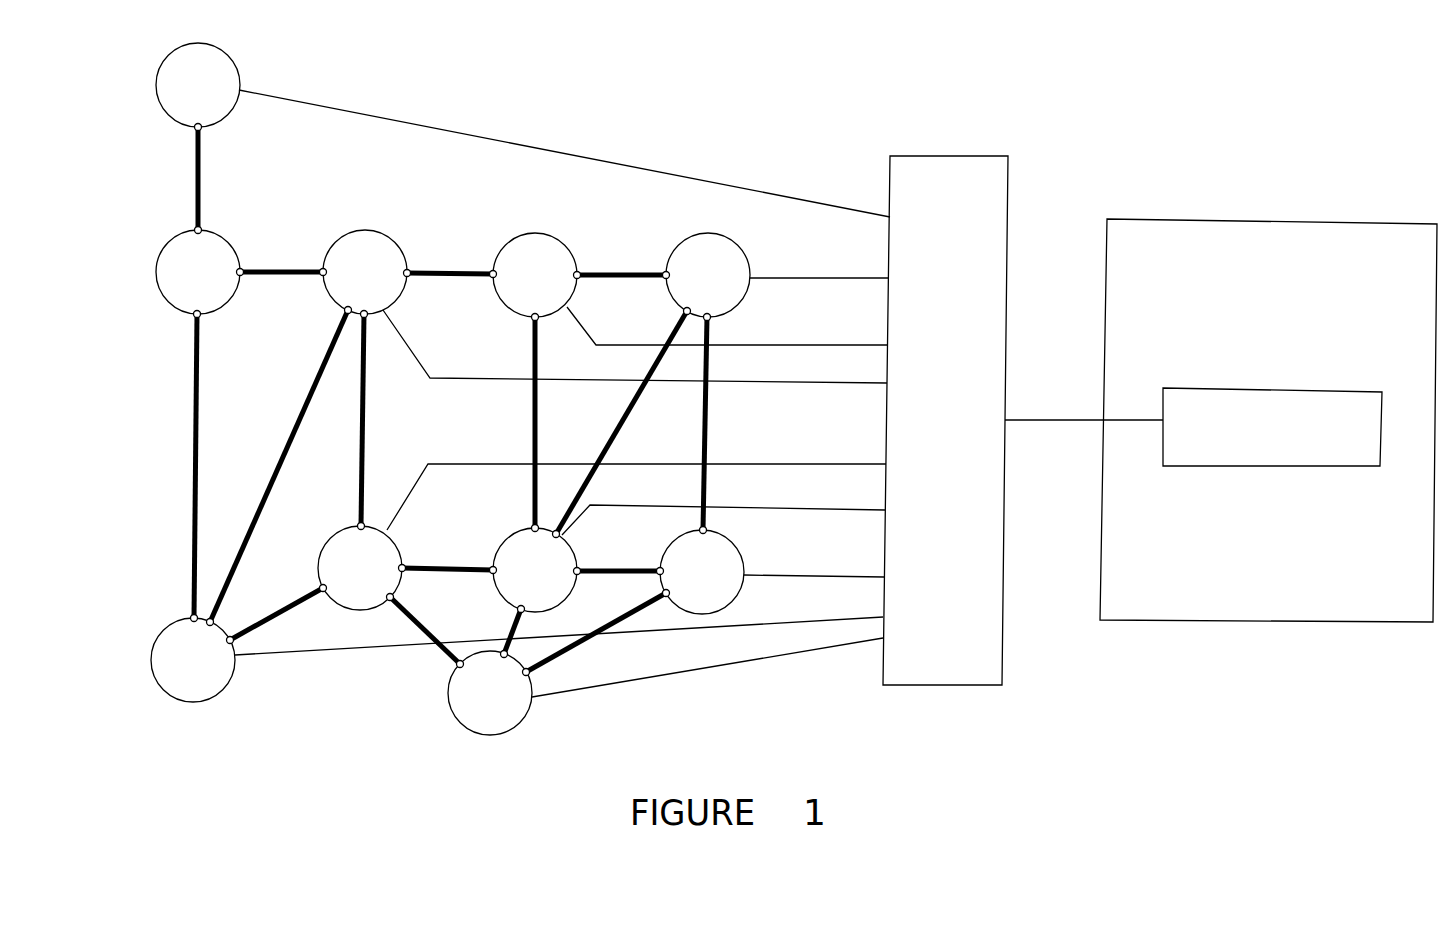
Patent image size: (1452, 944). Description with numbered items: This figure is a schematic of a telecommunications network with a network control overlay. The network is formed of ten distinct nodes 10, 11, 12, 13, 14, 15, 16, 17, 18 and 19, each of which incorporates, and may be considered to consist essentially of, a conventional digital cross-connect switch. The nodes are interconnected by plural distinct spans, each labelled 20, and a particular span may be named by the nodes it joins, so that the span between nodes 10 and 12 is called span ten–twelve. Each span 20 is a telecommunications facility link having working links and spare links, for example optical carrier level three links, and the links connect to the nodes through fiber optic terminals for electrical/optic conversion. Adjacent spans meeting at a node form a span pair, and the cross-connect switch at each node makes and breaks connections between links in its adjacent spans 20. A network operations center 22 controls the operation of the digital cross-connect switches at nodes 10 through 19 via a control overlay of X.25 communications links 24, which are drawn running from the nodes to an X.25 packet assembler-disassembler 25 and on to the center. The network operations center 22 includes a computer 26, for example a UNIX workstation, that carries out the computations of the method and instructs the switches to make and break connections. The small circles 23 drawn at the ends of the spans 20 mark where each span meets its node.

The node 10 is at (682, 587).
The node 11 is at (690, 290).
The node 12 is at (470, 708).
The node 13 is at (515, 585).
The node 14 is at (515, 290).
The node 15 is at (178, 100).
The node 16 is at (340, 583).
The node 17 is at (345, 287).
The node 18 is at (173, 675).
The node 19 is at (178, 287).
The span 20 is at (203, 172).
The network operations center 22 is at (1243, 219).
The link port/interface 23 is at (491, 275).
The X.25 communications links 24 is at (605, 162).
The X.25 PAD 25 is at (958, 686).
The computer 26 is at (1240, 466).